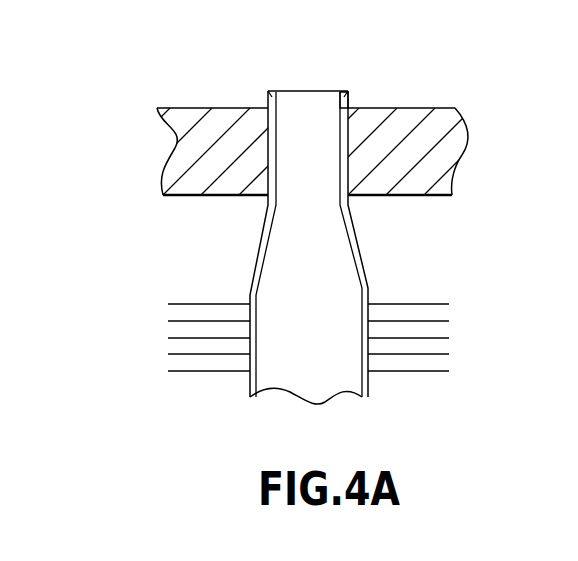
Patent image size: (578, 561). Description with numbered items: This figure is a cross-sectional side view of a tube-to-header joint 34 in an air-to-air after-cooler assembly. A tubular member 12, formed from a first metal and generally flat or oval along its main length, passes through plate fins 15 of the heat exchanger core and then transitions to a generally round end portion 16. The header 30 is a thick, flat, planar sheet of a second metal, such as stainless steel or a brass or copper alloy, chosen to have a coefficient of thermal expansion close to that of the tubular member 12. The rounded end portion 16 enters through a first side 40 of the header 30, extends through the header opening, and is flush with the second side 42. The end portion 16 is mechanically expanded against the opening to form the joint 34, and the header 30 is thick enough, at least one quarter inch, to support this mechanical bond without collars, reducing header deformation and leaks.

The tubular member 12 is at (260, 262).
The plate fins 15 is at (440, 372).
The end portion 16 is at (272, 92).
The header 30 is at (425, 197).
The joint 34 is at (350, 108).
The first side 40 is at (185, 195).
The second side 42 is at (207, 108).